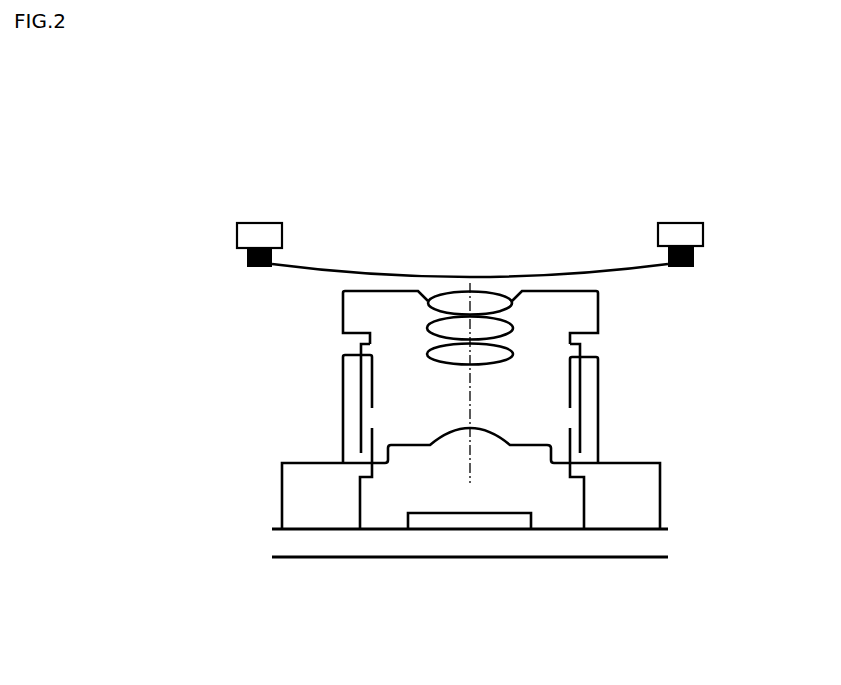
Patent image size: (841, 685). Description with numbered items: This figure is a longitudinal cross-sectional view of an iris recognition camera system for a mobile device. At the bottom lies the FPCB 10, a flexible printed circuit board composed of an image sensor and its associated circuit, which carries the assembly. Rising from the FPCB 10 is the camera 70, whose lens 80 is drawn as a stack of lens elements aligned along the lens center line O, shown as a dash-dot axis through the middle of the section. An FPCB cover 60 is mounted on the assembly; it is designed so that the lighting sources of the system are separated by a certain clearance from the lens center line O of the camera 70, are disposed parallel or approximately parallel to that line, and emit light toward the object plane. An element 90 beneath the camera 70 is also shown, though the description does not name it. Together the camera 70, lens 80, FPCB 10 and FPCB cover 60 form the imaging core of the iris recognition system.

The FPCB 10 is at (259, 268).
The FPCB cover 60 is at (258, 222).
The camera 70 is at (600, 395).
The lens 80 is at (429, 305).
The image sensor substrate 90 is at (471, 519).
The lens center line O is at (481, 397).